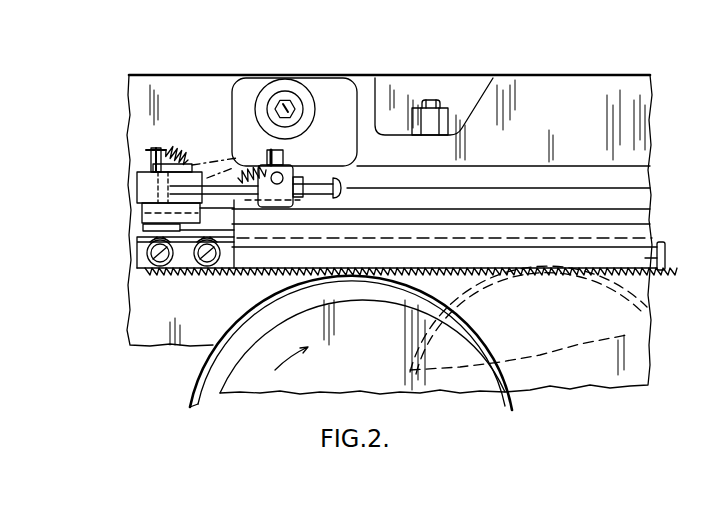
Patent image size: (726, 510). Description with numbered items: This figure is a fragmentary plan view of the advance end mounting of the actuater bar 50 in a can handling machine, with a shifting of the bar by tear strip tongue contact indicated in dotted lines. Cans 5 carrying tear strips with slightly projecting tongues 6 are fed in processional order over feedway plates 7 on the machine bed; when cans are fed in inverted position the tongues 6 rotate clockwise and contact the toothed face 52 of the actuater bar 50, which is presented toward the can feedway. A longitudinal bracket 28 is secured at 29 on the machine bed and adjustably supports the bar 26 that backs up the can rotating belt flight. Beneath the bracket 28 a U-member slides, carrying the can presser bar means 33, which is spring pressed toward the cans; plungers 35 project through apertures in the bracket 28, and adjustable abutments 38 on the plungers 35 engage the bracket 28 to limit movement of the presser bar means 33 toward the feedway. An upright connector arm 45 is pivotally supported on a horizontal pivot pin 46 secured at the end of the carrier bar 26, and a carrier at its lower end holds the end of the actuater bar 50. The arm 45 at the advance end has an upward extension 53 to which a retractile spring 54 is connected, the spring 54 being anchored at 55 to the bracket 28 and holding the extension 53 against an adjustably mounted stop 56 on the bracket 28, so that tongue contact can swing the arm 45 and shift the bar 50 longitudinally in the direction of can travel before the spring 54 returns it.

The cans 5 is at (198, 377).
The tear strip tongue 6 is at (262, 301).
The feedway plate 7 is at (142, 335).
The bar 26 is at (647, 242).
The longitudinal bracket 28 is at (640, 177).
The securing point of bracket 29 is at (283, 106).
The can presser bar means 33 is at (645, 258).
The plunger 35 is at (434, 104).
The adjustable abutment 38 is at (428, 122).
The connector arm 45 is at (175, 175).
The pivot pin 46 is at (160, 237).
The actuater bar 50 is at (153, 271).
The toothed face 52 is at (215, 275).
The upward extension 53 is at (148, 192).
The retractile spring 54 is at (177, 150).
The spring anchor 55 is at (293, 168).
The adjustably mounted stop 56 is at (213, 188).